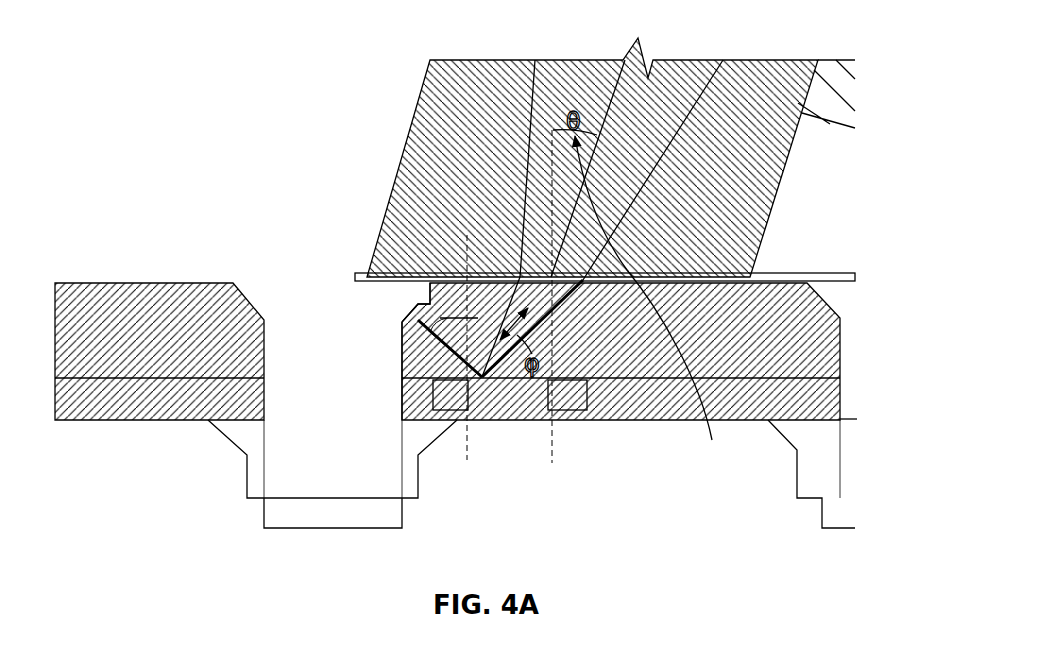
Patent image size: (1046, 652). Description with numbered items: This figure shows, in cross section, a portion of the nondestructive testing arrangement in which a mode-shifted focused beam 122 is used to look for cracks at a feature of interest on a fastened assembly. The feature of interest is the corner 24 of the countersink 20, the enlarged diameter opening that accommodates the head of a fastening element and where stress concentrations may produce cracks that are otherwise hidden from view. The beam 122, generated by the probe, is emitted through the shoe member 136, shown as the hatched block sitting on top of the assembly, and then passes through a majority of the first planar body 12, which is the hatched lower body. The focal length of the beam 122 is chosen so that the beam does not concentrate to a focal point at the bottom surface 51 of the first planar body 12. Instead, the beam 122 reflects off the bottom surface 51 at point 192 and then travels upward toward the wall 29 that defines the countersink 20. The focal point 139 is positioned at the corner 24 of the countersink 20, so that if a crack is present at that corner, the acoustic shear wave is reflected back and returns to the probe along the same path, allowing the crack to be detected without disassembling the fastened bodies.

The first planar body 12 is at (828, 343).
The countersink 20 is at (262, 321).
The corner of the countersink 24 is at (403, 372).
The wall defining the countersink 29 is at (428, 303).
The bottom surface 51 is at (538, 384).
The mode-shifted focused beam 122 is at (558, 305).
The shoe member 136 is at (760, 276).
The focal point 139 is at (401, 321).
The reflection point 192 is at (530, 384).